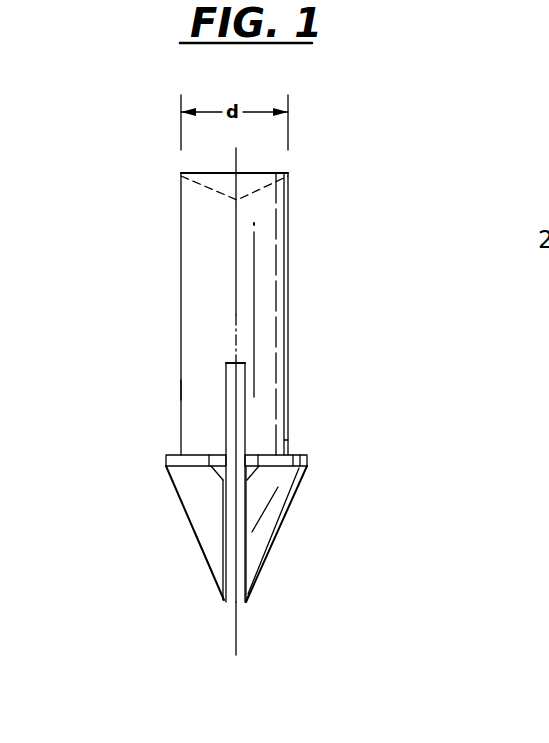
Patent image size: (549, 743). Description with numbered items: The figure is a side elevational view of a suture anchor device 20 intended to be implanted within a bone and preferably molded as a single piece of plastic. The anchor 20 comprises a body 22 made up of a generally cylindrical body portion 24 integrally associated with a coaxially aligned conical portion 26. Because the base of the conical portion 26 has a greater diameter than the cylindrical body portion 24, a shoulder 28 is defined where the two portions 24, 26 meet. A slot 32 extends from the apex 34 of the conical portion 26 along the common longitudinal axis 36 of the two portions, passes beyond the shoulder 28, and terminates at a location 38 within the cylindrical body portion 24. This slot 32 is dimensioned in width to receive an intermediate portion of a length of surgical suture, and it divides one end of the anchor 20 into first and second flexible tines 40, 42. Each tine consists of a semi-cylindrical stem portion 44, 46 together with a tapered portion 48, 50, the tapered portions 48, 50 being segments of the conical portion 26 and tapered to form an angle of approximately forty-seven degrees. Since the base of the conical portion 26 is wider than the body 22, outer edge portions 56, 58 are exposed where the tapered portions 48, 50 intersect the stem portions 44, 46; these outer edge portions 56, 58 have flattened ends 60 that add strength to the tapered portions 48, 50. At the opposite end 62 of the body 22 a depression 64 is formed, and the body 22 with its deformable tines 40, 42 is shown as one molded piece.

The suture anchor device 20 is at (88, 237).
The body 22 is at (190, 340).
The cylindrical body portion 24 is at (365, 274).
The conical portion 26 is at (388, 552).
The shoulder 28 is at (287, 442).
The slot 32 is at (242, 437).
The apex 34 is at (247, 602).
The longitudinal axis 36 is at (238, 648).
The location 38 is at (238, 362).
The first flexible tine 40 is at (198, 492).
The second flexible tine 42 is at (282, 500).
The semi-cylindrical stem portion 44 is at (198, 395).
The semi-cylindrical stem portion 46 is at (265, 388).
The tapered portion 48 is at (208, 540).
The tapered portion 50 is at (260, 547).
The outer edge portion 56 is at (172, 455).
The outer edge portion 58 is at (300, 452).
The flattened ends 60 is at (210, 450).
The end of the body 62 is at (288, 173).
The depression 64 is at (176, 188).